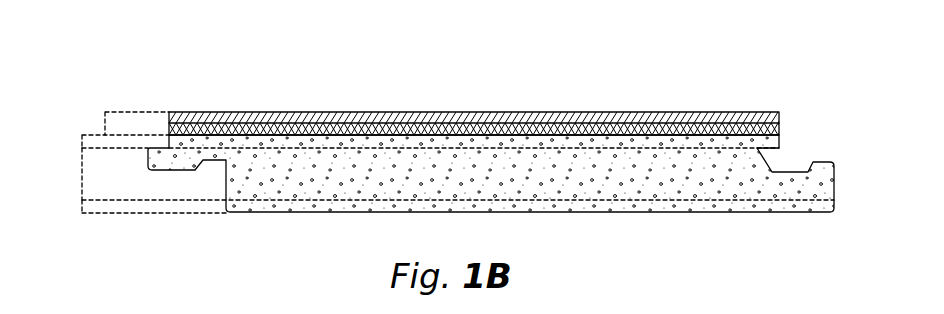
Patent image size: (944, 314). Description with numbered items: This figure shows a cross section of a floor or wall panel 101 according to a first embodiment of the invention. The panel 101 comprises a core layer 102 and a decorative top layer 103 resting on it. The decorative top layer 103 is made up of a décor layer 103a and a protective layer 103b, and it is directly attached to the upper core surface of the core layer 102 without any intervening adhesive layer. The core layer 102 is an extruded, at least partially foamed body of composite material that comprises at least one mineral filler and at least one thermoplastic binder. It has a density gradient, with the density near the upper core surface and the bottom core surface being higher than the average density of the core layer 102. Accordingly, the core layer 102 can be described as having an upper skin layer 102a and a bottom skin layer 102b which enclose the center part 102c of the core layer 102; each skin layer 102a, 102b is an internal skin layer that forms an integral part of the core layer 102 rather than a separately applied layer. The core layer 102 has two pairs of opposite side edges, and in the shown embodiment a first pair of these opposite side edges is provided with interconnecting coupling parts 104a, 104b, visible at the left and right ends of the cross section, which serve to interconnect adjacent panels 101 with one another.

The panel 101 is at (164, 78).
The core layer 102 is at (508, 183).
The upper skin layer 102a is at (82, 142).
The bottom skin layer 102b is at (82, 207).
The center part 102c is at (82, 174).
The decorative top layer 103 is at (105, 127).
The décor layer 103a is at (420, 113).
The protective layer 103b is at (520, 113).
The interconnecting coupling part 104a is at (181, 186).
The interconnecting coupling part 104b is at (809, 127).